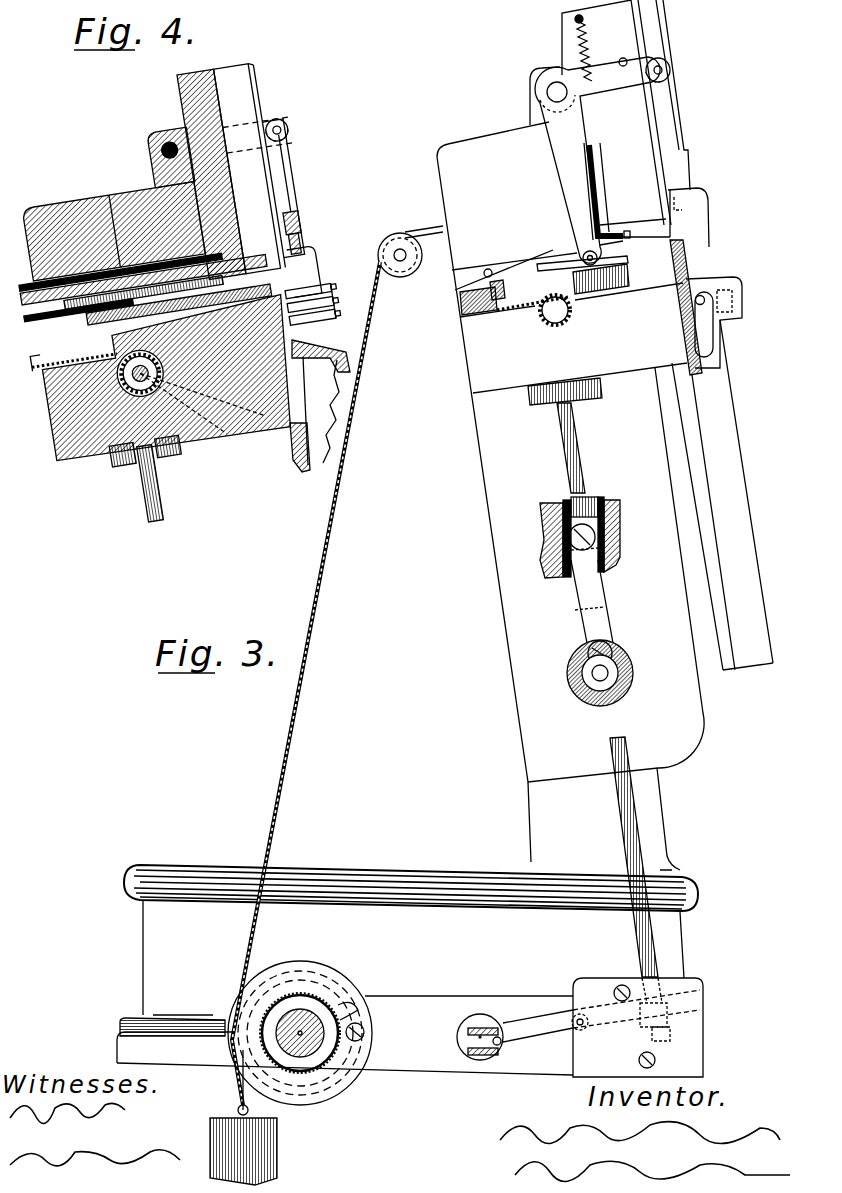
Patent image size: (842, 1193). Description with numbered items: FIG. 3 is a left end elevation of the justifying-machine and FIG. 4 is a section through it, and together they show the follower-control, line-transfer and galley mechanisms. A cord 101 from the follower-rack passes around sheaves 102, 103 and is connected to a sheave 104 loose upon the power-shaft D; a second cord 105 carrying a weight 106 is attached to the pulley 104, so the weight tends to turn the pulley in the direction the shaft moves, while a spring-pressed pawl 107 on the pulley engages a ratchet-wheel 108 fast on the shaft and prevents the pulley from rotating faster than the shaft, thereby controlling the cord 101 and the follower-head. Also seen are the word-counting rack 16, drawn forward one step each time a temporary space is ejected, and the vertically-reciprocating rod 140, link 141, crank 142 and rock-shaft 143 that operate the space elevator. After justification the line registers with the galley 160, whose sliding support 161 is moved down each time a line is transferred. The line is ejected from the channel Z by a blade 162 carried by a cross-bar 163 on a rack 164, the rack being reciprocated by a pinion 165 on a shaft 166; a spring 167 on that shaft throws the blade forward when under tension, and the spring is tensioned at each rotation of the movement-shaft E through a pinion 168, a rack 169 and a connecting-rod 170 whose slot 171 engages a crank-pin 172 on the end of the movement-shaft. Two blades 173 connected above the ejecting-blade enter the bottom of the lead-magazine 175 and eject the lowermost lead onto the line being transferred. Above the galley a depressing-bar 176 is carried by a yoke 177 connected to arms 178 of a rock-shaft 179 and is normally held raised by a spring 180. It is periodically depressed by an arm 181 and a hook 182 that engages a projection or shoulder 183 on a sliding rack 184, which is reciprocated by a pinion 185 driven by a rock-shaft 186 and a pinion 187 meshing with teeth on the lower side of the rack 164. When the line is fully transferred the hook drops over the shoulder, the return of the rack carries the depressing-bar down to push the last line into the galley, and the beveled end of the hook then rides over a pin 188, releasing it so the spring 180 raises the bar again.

In FIG. 3, the word-counting rack 16 is at (722, 406).
In FIG. 3, the cord 101 is at (318, 574).
In FIG. 3, the sheave 102 is at (398, 233).
In FIG. 4, the sheave 103 is at (110, 200).
In FIG. 3, the sheave 104 is at (328, 966).
In FIG. 3, the second cord 105 is at (242, 1086).
In FIG. 3, the weight 106 is at (277, 1145).
In FIG. 3, the spring-pressed pawl 107 is at (362, 1018).
In FIG. 3, the ratchet-wheel 108 is at (328, 1055).
In FIG. 3, the vertically-reciprocating rod 140 is at (608, 500).
In FIG. 3, the link 141 is at (598, 598).
In FIG. 3, the crank 142 is at (620, 660).
In FIG. 3, the rock-shaft 143 is at (598, 685).
In FIG. 4, the galley 160 is at (320, 406).
In FIG. 4, the sliding support 161 is at (338, 312).
In FIG. 3, the sliding support 161 is at (742, 282).
In FIG. 4, the blade 162 is at (134, 305).
In FIG. 4, the cross-bar 163 is at (38, 365).
In FIG. 4, the rack 164 is at (79, 331).
In FIG. 4, the pinion 165 is at (179, 319).
In FIG. 4, the shaft 166 is at (140, 498).
In FIG. 3, the shaft 166 is at (580, 438).
In FIG. 4, the spring 167 is at (103, 462).
In FIG. 3, the pinion 168 is at (670, 995).
In FIG. 3, the rack 169 is at (703, 1022).
In FIG. 3, the connecting-rod 170 is at (548, 1045).
In FIG. 3, the slot 171 is at (466, 1048).
In FIG. 3, the crank-pin 172 is at (503, 1028).
In FIG. 4, the blades 173 is at (114, 309).
In FIG. 4, the lead-magazine 175 is at (252, 78).
In FIG. 4, the depressing-bar 176 is at (296, 250).
In FIG. 3, the depressing-bar 176 is at (697, 196).
In FIG. 4, the yoke 177 is at (290, 188).
In FIG. 3, the yoke 177 is at (674, 128).
In FIG. 4, the arms 178 is at (270, 125).
In FIG. 3, the arms 178 is at (658, 70).
In FIG. 4, the rock-shaft 179 is at (150, 137).
In FIG. 3, the rock-shaft 179 is at (547, 92).
In FIG. 3, the spring 180 is at (590, 48).
In FIG. 3, the arm 181 is at (582, 128).
In FIG. 3, the hook 182 is at (555, 262).
In FIG. 3, the projection 183 is at (498, 280).
In FIG. 3, the sliding rack 184 is at (518, 308).
In FIG. 3, the pinion 185 is at (568, 312).
In FIG. 4, the rock-shaft 186 is at (224, 435).
In FIG. 4, the pinion 187 is at (190, 440).
In FIG. 3, the pin 188 is at (455, 290).
In FIG. 3, the power-shaft D is at (310, 1060).
In FIG. 3, the movement-shaft E is at (486, 1060).
In FIG. 4, the channel Z is at (317, 295).